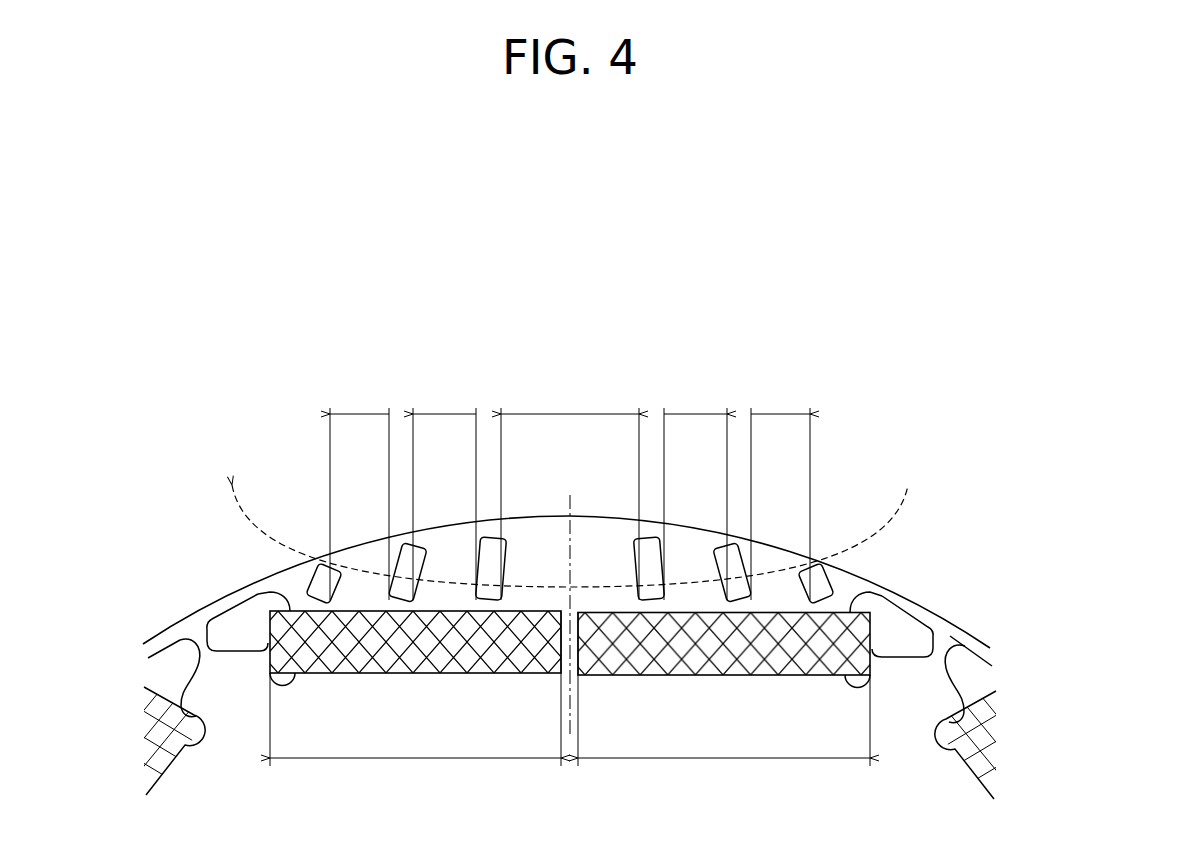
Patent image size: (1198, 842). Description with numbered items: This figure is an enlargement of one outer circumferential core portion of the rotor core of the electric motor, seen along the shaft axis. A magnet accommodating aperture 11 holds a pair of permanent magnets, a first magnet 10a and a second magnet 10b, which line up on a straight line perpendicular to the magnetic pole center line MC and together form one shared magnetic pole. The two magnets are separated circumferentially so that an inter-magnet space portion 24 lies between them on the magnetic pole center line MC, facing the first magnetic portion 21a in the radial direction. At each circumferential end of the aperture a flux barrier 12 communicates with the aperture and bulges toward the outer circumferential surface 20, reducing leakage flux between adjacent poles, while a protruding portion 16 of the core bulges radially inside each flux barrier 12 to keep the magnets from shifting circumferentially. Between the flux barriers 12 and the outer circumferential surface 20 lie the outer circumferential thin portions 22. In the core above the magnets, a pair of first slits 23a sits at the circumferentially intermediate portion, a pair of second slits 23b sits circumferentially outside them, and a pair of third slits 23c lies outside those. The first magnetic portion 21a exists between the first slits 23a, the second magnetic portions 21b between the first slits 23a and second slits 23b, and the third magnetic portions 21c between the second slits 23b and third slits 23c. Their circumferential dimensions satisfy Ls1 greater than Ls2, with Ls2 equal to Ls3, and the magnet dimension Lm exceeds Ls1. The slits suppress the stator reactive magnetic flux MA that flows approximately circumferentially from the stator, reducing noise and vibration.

The first magnet 10a is at (258, 618).
The second magnet 10b is at (882, 614).
The magnet accommodating aperture 11 is at (839, 615).
The flux barrier 12 is at (207, 594).
The protruding portion 16 is at (183, 633).
The outer circumferential surface 20 is at (969, 630).
The first magnetic portion 21a is at (600, 532).
The second magnetic portion 21b is at (445, 541).
The third magnetic portion 21c is at (362, 560).
The outer circumferential thin portion 22 is at (243, 668).
The first slit 23a is at (493, 542).
The second slit 23b is at (407, 558).
The third slit 23c is at (323, 577).
The inter-magnet space portion 24 is at (563, 612).
The magnetic pole center line MC is at (569, 508).
The stator reactive magnetic flux MA is at (557, 521).
The dimension of the first and second magnets Lm is at (570, 719).
The dimension of the first magnetic portion Ls1 is at (570, 397).
The dimension of the second magnetic portions Ls2 is at (570, 397).
The dimension of the third magnetic portions Ls3 is at (570, 397).